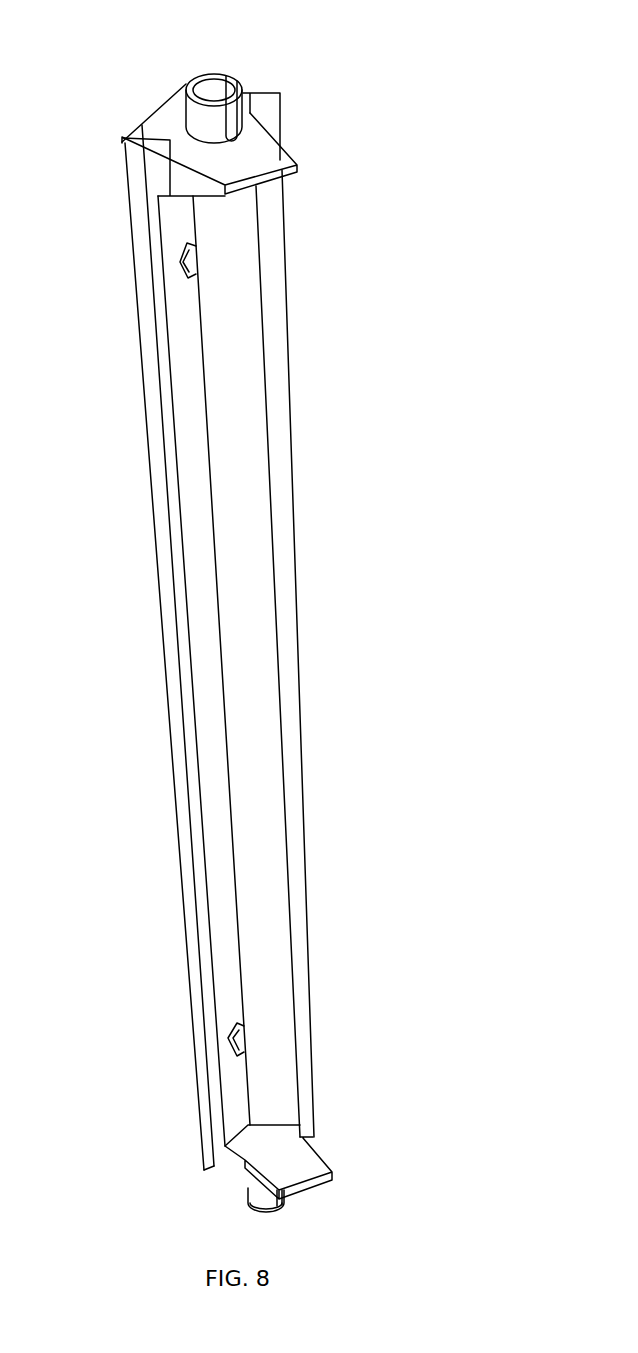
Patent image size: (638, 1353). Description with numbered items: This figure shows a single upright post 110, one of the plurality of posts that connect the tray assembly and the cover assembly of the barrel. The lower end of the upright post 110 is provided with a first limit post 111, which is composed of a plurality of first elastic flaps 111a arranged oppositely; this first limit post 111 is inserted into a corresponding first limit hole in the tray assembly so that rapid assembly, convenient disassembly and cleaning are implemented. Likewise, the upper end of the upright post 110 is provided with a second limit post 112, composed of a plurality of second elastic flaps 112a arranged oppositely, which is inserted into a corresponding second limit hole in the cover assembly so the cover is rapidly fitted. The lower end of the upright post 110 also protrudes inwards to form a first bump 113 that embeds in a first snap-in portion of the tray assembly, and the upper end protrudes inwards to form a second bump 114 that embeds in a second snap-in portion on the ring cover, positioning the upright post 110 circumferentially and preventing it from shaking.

The upright post 110 is at (187, 570).
The first limit post 111 is at (235, 1200).
The first elastic flaps 111a is at (252, 1203).
The second limit post 112 is at (203, 70).
The second elastic flaps 112a is at (197, 94).
The first bump 113 is at (302, 1170).
The second bump 114 is at (257, 160).